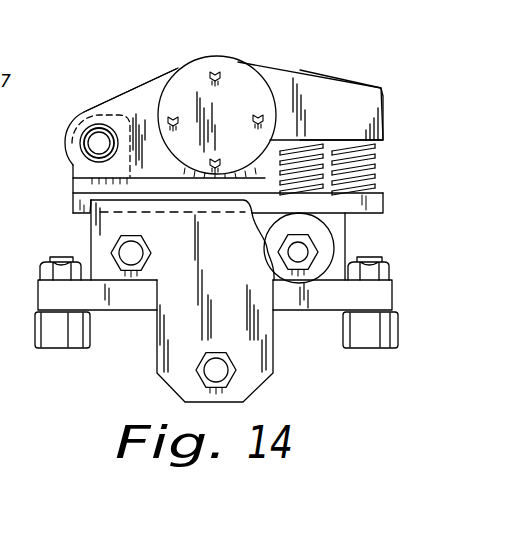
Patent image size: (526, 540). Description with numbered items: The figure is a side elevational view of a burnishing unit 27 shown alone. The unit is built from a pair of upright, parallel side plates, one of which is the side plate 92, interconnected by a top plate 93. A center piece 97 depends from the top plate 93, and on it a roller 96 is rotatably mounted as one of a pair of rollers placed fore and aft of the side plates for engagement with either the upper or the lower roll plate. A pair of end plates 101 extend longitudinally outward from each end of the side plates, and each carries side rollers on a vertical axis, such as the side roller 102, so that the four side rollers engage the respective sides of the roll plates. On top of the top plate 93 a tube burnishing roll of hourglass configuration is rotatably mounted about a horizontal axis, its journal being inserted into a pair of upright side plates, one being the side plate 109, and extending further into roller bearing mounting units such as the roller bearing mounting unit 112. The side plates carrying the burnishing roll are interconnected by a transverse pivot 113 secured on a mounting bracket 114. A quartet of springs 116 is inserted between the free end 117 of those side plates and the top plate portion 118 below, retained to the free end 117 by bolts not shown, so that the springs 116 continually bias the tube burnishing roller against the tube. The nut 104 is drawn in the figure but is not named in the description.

The burnishing unit 27 is at (181, 54).
The side plate 92 is at (180, 354).
The top plate 93 is at (77, 204).
The roller 96 is at (328, 247).
The center piece 97 is at (336, 222).
The end plate 101 is at (375, 292).
The side roller 102 is at (62, 338).
The nut 104 is at (385, 345).
The side plate 109 is at (274, 69).
The roller bearing mounting unit 112 is at (220, 77).
The transverse pivot 113 is at (96, 140).
The mounting bracket 114 is at (80, 184).
The springs 116 is at (373, 164).
The free end 117 is at (368, 98).
The top plate portion 118 is at (383, 198).